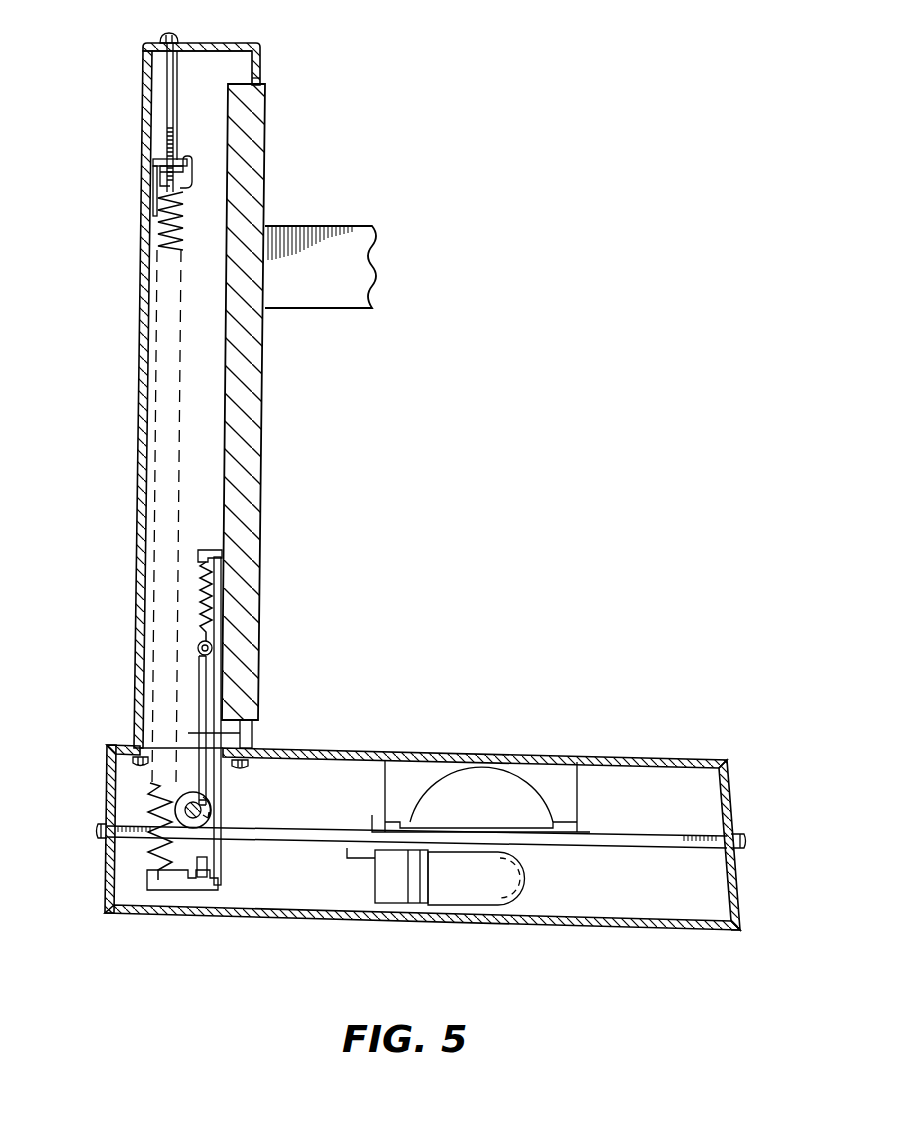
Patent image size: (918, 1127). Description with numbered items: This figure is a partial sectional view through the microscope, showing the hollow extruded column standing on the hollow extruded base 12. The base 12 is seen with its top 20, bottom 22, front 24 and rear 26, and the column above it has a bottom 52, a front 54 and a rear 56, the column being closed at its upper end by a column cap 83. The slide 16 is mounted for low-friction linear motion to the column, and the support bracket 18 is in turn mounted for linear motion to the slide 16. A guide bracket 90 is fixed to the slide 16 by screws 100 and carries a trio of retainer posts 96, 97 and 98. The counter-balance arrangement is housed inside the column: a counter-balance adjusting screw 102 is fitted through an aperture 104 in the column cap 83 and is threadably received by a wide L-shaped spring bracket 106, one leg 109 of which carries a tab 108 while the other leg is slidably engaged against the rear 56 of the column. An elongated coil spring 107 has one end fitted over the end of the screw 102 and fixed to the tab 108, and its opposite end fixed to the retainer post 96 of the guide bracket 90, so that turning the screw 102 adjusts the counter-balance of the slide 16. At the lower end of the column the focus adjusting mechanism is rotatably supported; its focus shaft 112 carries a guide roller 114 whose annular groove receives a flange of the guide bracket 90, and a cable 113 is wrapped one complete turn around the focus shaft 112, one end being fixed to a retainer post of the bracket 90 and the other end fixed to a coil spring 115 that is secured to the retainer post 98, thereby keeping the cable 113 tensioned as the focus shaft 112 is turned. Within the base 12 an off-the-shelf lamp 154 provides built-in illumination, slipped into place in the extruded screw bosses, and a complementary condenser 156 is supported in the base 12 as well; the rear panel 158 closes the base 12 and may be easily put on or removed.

The base 12 is at (640, 758).
The slide 16 is at (265, 148).
The support bracket 18 is at (378, 240).
The top 20 is at (698, 760).
The bottom 22 is at (345, 925).
The front 24 is at (745, 932).
The rear 26 is at (104, 912).
The bottom 52 is at (147, 750).
The front 54 is at (262, 66).
The rear 56 is at (142, 404).
The column cap 83 is at (223, 43).
The guide bracket 90 is at (224, 846).
The retainer post 96 is at (150, 873).
The retainer post 97 is at (208, 550).
The retainer post 98 is at (220, 884).
The screws 100 is at (214, 706).
The counter-balance adjusting screw 102 is at (165, 112).
The aperture 104 is at (166, 58).
The spring bracket 106 is at (157, 186).
The coil spring 107 is at (162, 241).
The tab 108 is at (194, 160).
The leg 109 is at (155, 162).
The focus shaft 112 is at (207, 800).
The cable 113 is at (245, 733).
The guide roller 114 is at (212, 811).
The coil spring 115 is at (202, 595).
The lamp 154 is at (524, 880).
The condenser 156 is at (458, 770).
The rear panel 158 is at (100, 852).